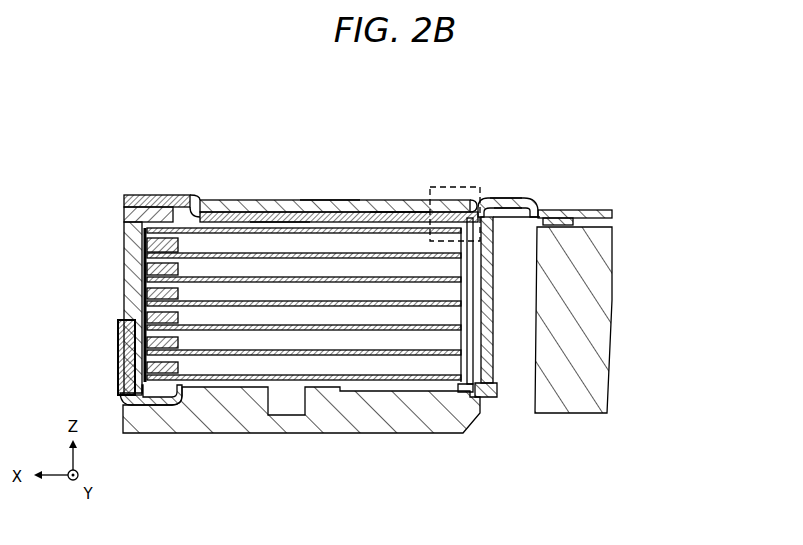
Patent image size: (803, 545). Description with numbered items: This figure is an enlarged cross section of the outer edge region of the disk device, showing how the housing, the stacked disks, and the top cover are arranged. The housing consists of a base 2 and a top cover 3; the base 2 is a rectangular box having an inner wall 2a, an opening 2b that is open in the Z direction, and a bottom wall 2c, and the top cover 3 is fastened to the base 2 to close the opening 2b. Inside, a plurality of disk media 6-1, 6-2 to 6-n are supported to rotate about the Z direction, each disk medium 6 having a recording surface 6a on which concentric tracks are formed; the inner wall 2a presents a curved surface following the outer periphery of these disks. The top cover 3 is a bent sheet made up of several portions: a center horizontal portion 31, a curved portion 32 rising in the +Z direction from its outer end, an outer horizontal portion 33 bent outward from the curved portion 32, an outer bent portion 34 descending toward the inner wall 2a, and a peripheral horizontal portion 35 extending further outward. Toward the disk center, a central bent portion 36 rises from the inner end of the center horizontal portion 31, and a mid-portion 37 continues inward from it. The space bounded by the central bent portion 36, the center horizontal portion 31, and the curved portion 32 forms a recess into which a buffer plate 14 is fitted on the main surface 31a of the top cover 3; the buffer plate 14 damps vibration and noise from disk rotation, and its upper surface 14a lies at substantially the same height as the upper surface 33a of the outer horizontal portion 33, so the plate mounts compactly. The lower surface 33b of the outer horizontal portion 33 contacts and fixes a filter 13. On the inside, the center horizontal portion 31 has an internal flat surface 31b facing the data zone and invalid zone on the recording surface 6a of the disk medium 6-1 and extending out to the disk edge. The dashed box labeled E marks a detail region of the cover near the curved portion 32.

The base 2 is at (445, 357).
The inner wall 2a is at (600, 348).
The opening 2b is at (523, 296).
The bottom wall 2c is at (403, 418).
The top cover 3 is at (368, 225).
The disk medium 6 is at (255, 281).
The recording surface 6a is at (233, 222).
The disk medium 6-1 is at (198, 238).
The disk medium 6-2 is at (198, 263).
The disk medium 6-n is at (215, 384).
The filter 13 is at (548, 398).
The buffer plate 14 is at (314, 204).
The upper surface 14a is at (334, 194).
The center horizontal portion 31 is at (376, 216).
The main surface 31a is at (399, 206).
The internal flat surface 31b is at (278, 234).
The curved portion 32 is at (466, 212).
The outer horizontal portion 33 is at (488, 206).
The upper surface 33a is at (511, 192).
The lower surface 33b is at (511, 215).
The outer bent portion 34 is at (533, 205).
The peripheral horizontal portion 35 is at (596, 208).
The central bent portion 36 is at (194, 195).
The mid-portion 37 is at (145, 196).
The region E is at (448, 185).